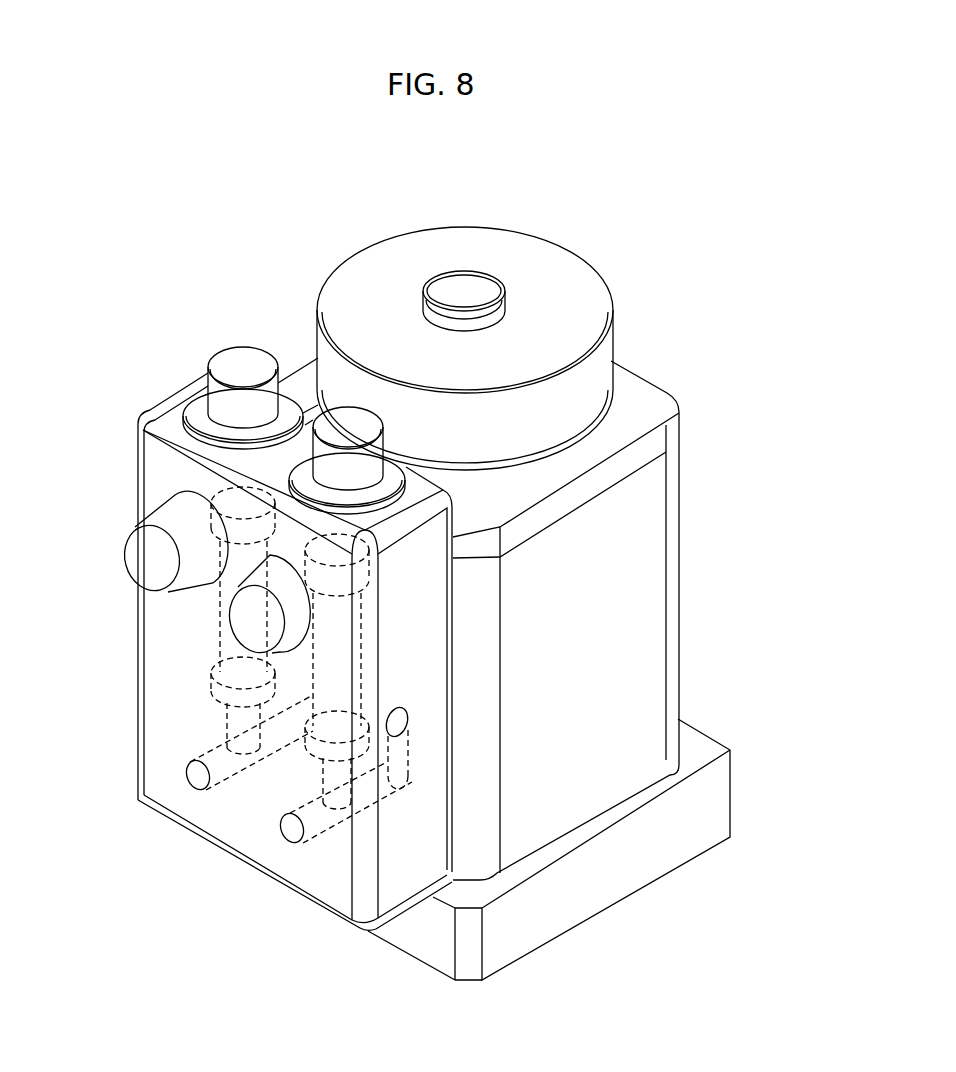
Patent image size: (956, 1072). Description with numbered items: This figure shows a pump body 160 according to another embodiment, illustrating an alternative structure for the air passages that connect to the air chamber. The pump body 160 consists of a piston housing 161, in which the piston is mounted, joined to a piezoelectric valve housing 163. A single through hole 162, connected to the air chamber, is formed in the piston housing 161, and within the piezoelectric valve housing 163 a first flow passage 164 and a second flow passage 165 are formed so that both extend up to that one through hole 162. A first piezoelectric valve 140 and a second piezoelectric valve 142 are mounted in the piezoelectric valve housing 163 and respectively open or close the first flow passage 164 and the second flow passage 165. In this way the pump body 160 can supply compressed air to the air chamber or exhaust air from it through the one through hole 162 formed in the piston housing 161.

The pump body 160 is at (722, 495).
The piston housing 161 is at (645, 587).
The through hole 162 is at (407, 719).
The piezoelectric valve housing 163 is at (155, 460).
The first piezoelectric valve 140 is at (200, 626).
The second piezoelectric valve 142 is at (296, 679).
The first flow passage 164 is at (196, 778).
The second flow passage 165 is at (291, 832).